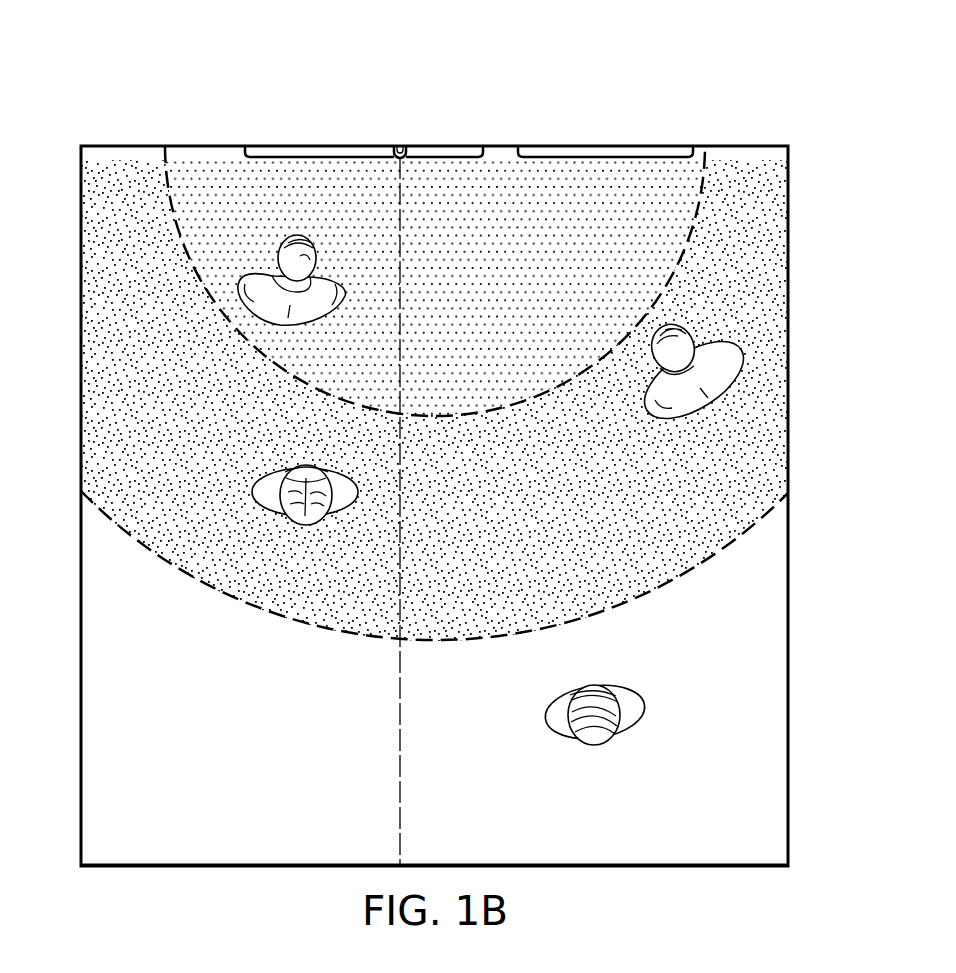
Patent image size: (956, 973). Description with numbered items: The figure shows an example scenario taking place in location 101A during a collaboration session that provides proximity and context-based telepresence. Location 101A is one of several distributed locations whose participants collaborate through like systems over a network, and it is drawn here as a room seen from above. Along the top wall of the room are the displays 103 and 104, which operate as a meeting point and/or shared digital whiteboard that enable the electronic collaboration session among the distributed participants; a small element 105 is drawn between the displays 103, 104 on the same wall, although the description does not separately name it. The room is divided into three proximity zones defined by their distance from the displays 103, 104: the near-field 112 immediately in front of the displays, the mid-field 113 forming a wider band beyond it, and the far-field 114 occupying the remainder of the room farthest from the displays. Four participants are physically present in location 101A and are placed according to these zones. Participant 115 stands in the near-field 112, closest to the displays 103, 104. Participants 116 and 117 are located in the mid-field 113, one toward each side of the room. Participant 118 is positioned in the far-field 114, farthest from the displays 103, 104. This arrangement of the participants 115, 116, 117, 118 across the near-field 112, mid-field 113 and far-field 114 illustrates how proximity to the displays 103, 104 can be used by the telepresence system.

The location 101A is at (531, 79).
The display 103 is at (297, 152).
The display 104 is at (636, 152).
The sensor / microphone 105 is at (400, 150).
The near-field 112 is at (528, 304).
The mid-field 113 is at (528, 539).
The far-field 114 is at (528, 774).
The participant 115 is at (290, 238).
The participant 116 is at (692, 416).
The participant 117 is at (305, 525).
The participant 118 is at (612, 745).